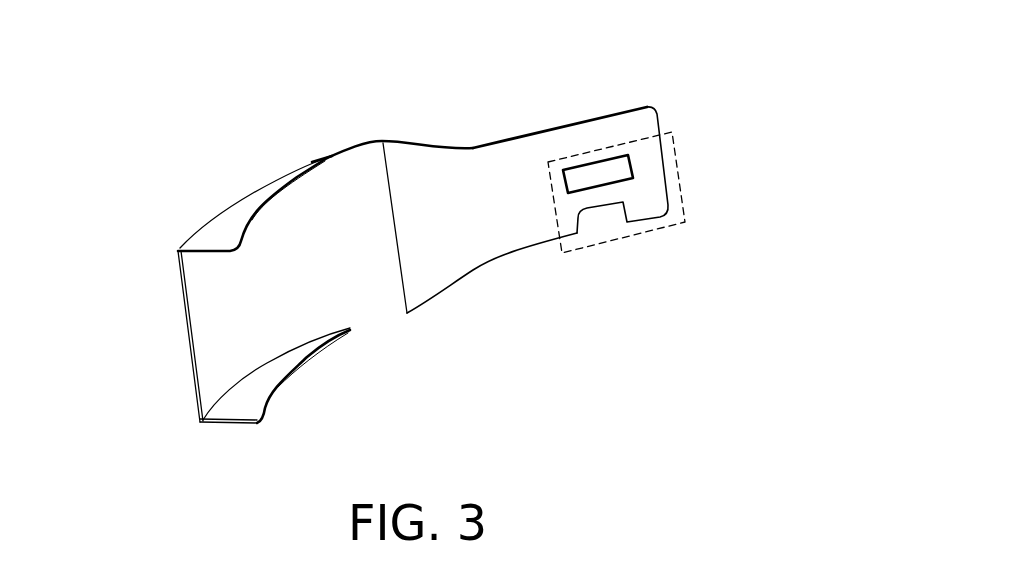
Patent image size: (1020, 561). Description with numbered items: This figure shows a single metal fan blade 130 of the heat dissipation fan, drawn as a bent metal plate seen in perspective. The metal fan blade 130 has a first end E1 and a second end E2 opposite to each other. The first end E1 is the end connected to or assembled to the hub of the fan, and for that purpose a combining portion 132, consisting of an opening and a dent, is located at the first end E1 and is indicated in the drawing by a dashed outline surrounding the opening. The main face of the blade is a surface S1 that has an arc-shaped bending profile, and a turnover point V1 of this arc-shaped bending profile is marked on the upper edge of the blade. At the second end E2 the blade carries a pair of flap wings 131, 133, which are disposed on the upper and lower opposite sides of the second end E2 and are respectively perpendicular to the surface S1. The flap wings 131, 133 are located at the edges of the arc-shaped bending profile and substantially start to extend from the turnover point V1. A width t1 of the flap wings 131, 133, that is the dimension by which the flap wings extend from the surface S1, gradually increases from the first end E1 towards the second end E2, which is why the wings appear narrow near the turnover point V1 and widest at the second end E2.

The metal fan blade 130 is at (775, 453).
The flap wing 131 is at (235, 213).
The combining portion 132 is at (680, 173).
The flap wing 133 is at (225, 415).
The first end E1 is at (627, 106).
The second end E2 is at (176, 246).
The turnover point V1 is at (319, 150).
The surface S1 is at (349, 278).
The width t1 is at (237, 393).